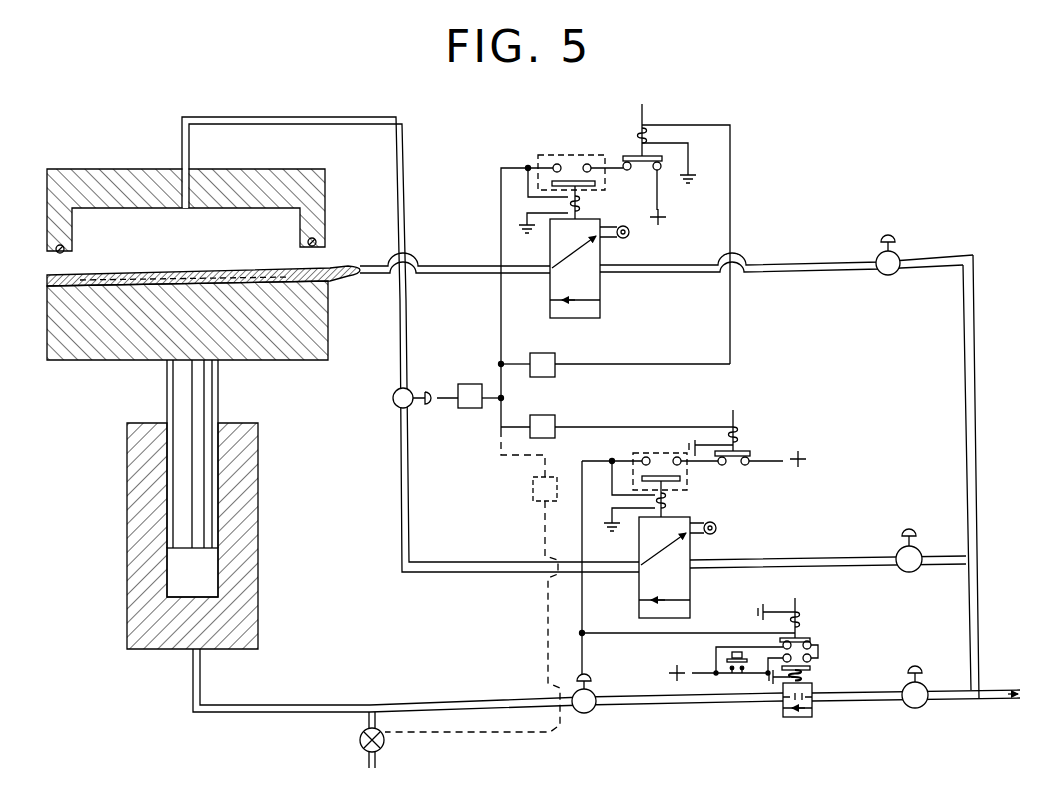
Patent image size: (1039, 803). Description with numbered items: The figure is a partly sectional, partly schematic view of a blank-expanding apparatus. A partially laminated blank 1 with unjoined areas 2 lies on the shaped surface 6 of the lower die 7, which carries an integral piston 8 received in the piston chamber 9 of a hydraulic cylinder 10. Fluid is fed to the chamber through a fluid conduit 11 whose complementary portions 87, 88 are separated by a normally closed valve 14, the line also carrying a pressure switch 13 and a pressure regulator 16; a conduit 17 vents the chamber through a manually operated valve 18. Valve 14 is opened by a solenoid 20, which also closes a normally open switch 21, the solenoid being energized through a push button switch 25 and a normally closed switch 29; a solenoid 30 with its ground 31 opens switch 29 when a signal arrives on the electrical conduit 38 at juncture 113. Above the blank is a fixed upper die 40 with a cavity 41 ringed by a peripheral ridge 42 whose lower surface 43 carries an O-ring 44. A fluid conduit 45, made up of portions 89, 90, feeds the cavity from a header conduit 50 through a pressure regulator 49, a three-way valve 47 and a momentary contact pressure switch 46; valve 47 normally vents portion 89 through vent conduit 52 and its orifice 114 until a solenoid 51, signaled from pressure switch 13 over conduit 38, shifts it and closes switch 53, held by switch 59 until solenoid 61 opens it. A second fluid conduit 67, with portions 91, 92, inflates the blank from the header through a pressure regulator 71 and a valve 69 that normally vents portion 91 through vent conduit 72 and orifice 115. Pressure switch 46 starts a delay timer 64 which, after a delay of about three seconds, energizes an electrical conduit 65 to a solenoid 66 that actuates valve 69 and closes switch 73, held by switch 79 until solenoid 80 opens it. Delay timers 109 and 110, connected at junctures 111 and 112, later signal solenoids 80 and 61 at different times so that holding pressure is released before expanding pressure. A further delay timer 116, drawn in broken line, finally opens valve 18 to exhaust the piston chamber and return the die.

The partially laminated blank 1 is at (214, 271).
The laminations or unjoined areas 2 is at (178, 272).
The shaped surface 6 is at (47, 298).
The die 7 is at (78, 360).
The piston 8 is at (216, 380).
The piston chamber 9 is at (196, 580).
The hydraulic cylinder 10 is at (127, 598).
The fluid conduit 11 is at (252, 704).
The pressure switch 13 is at (586, 713).
The valve 14 is at (794, 717).
The pressure regulator 16 is at (914, 709).
The conduit 17 is at (366, 724).
The manually operated valve 18 is at (360, 744).
The solenoid 20 is at (812, 678).
The electric switch 21 is at (814, 667).
The push button switch 25 is at (743, 657).
The electric switch 29 is at (812, 639).
The solenoid 30 is at (801, 617).
The ground 31 is at (768, 592).
The electrical conduit 38 is at (582, 597).
The upper die 40 is at (47, 181).
The die chamber or cavity 41 is at (190, 238).
The integral peripheral ridge 42 is at (47, 236).
The lower surface 43 is at (55, 252).
The O-ring 44 is at (66, 251).
The fluid conduit 45 is at (320, 117).
The momentary contact pressure switch 46 is at (392, 398).
The three-way valve 47 is at (639, 607).
The pressure regulator 49 is at (912, 572).
The header conduit 50 is at (966, 393).
The solenoid 51 is at (669, 500).
The vent conduit 52 is at (713, 522).
The electrical switch 53 is at (662, 453).
The electrical switch 59 is at (742, 452).
The solenoid 61 is at (743, 426).
The delay timer 64 is at (458, 408).
The electrical conduit 65 is at (501, 322).
The solenoid 66 is at (581, 203).
The fluid conduit 67 is at (428, 266).
The valve 69 is at (584, 318).
The pressure regulator 71 is at (897, 254).
The vent conduit 72 is at (627, 226).
The switch 73 is at (577, 155).
The electrical switch 79 is at (636, 156).
The solenoid 80 is at (640, 130).
The complementary fluid conduit portion 87 is at (666, 704).
The complementary fluid conduit portion 88 is at (882, 690).
The complementary fluid conduit portion 89 is at (402, 493).
The complementary fluid conduit portion 90 is at (820, 559).
The complementary portion 91 is at (488, 274).
The complementary portion 92 is at (830, 262).
The delay timer 109 is at (555, 374).
The delay timer 110 is at (555, 420).
The juncture 111 is at (502, 362).
The juncture 112 is at (503, 398).
The juncture 113 is at (583, 636).
The control orifice 114 is at (707, 534).
The control orifice 115 is at (619, 238).
The delay timer 116 is at (533, 487).